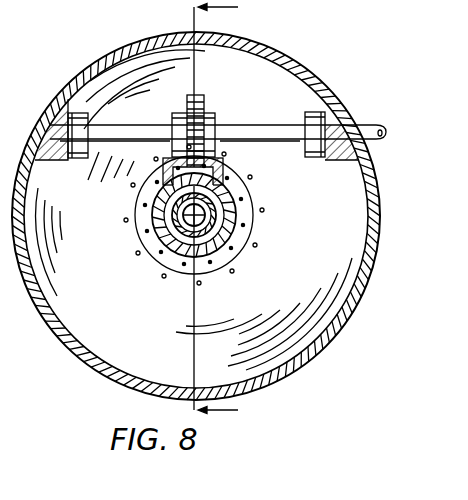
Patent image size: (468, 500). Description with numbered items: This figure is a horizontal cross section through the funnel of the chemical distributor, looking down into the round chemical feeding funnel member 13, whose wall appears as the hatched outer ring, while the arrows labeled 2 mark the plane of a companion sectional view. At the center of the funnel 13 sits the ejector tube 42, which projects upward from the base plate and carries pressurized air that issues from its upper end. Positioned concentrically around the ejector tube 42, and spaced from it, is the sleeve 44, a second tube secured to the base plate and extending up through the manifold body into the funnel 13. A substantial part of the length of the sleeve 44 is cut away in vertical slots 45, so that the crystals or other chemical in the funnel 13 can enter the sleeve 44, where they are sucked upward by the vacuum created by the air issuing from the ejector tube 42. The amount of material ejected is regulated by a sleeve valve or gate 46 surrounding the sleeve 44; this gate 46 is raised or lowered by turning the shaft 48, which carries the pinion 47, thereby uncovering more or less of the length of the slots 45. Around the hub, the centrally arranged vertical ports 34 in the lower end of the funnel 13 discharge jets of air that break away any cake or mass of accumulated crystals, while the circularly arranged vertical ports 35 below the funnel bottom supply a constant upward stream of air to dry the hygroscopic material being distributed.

The section line 2- 2 is at (222, 213).
The funnel member 13 is at (85, 67).
The vertical ports 34 is at (263, 240).
The vertical ports 35 is at (244, 217).
The ejector tube 42 is at (177, 209).
The sleeve 44 is at (157, 230).
The vertical slots 45 is at (172, 252).
The sleeve valve 46 is at (163, 244).
The pinion 47 is at (199, 96).
The shaft 48 is at (266, 133).